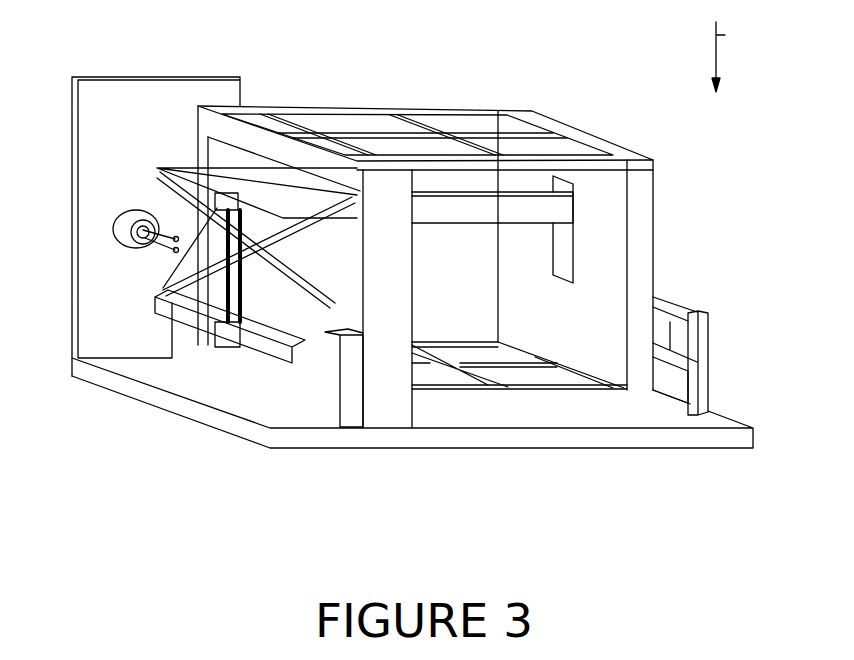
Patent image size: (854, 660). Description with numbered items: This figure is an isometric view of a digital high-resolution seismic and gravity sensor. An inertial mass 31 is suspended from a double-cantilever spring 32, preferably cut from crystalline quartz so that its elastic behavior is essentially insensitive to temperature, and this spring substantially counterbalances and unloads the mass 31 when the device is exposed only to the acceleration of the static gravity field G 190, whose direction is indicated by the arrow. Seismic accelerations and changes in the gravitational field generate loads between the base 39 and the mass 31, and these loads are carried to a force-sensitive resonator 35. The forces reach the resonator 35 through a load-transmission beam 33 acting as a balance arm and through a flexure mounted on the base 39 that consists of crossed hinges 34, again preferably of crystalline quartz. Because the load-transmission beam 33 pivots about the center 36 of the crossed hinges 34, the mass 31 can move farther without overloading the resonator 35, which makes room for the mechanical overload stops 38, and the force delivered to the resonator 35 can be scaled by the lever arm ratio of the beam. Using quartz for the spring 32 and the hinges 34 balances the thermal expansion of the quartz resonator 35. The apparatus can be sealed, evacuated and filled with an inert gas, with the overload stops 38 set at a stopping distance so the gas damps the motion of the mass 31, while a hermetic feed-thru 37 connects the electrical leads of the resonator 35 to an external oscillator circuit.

The mass 31 is at (645, 245).
The double-cantilever spring 32 is at (398, 108).
The load-transmission beam 33 is at (481, 211).
The crossed hinges 34 is at (167, 289).
The force-sensitive resonator 35 is at (212, 298).
The center of the crossed hinges 36 is at (335, 333).
The hermetic feed-thru 37 is at (120, 242).
The mechanical overload stops 38 is at (712, 348).
The base 39 is at (456, 438).
The static gravity field G 190 is at (745, 30).